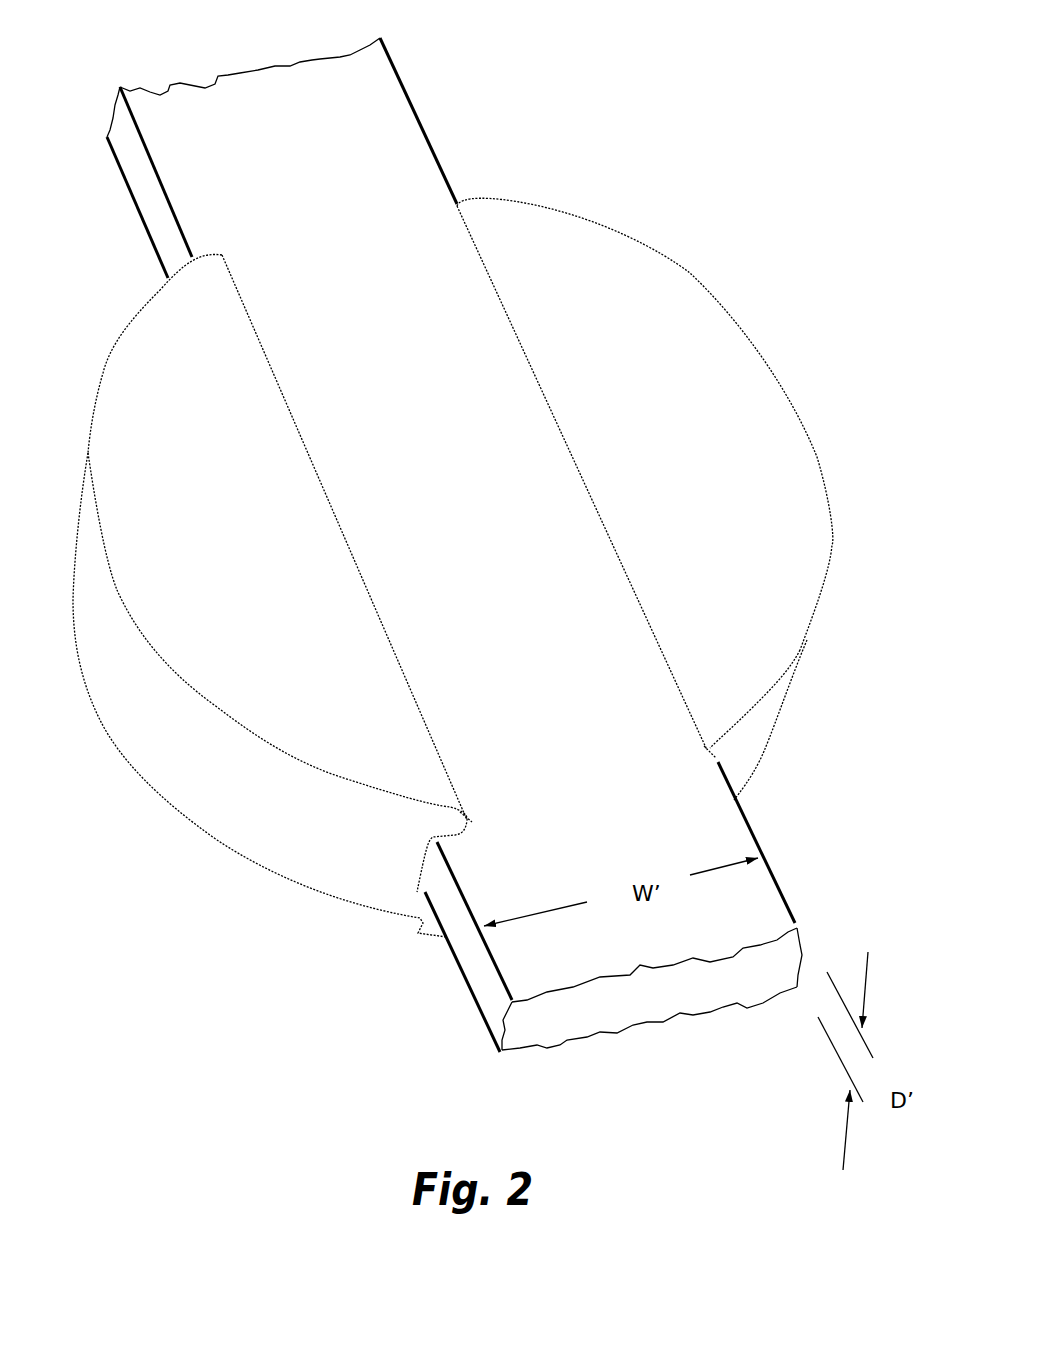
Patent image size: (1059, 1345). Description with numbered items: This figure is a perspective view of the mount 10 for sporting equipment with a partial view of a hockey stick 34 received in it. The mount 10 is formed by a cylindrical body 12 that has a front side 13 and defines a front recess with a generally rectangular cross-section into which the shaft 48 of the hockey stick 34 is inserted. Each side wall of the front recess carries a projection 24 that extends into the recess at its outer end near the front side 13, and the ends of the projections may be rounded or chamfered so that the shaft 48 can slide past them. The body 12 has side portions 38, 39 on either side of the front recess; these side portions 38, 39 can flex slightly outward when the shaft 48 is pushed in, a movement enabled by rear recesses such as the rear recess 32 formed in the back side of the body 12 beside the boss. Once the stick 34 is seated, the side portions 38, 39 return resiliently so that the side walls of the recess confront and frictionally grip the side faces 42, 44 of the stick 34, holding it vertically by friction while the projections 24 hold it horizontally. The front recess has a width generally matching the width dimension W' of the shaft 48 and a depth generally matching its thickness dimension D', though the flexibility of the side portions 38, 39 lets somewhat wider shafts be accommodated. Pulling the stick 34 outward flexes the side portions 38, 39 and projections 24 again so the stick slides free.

The mount 10 is at (697, 211).
The cylindrical body 12 is at (667, 382).
The front side 13 is at (600, 324).
The projection 24 is at (453, 823).
The rear recess 32 is at (150, 808).
The hockey stick 34 is at (701, 837).
The side portion 38 is at (701, 529).
The side portion 39 is at (236, 560).
The side face 42 is at (416, 91).
The side face 44 is at (140, 183).
The shaft 48 is at (433, 437).